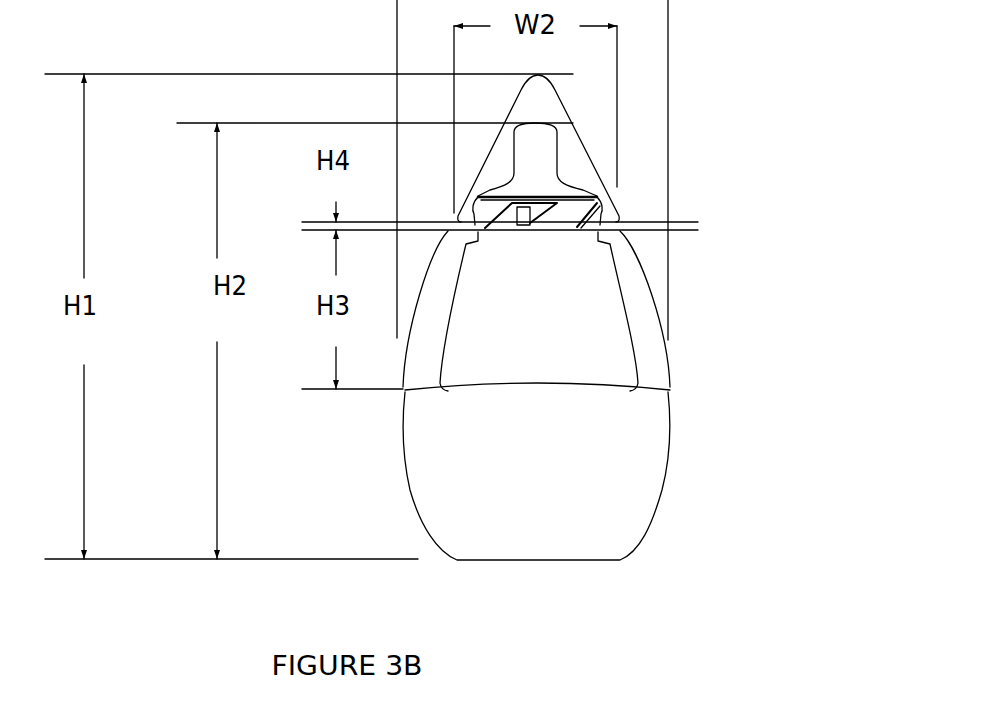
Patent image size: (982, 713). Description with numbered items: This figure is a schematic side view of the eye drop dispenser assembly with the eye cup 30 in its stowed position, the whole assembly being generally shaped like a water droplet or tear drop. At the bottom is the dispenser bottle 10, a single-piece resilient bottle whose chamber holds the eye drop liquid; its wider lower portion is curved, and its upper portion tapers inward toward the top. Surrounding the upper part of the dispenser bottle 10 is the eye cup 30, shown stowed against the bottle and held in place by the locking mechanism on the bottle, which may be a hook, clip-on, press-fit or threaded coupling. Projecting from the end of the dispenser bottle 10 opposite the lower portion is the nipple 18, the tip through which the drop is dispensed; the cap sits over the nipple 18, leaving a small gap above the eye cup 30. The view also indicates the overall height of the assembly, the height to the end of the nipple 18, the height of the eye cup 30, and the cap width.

The dispenser bottle 10 is at (725, 381).
The nipple 18 is at (548, 152).
The eye cup 30 is at (712, 294).